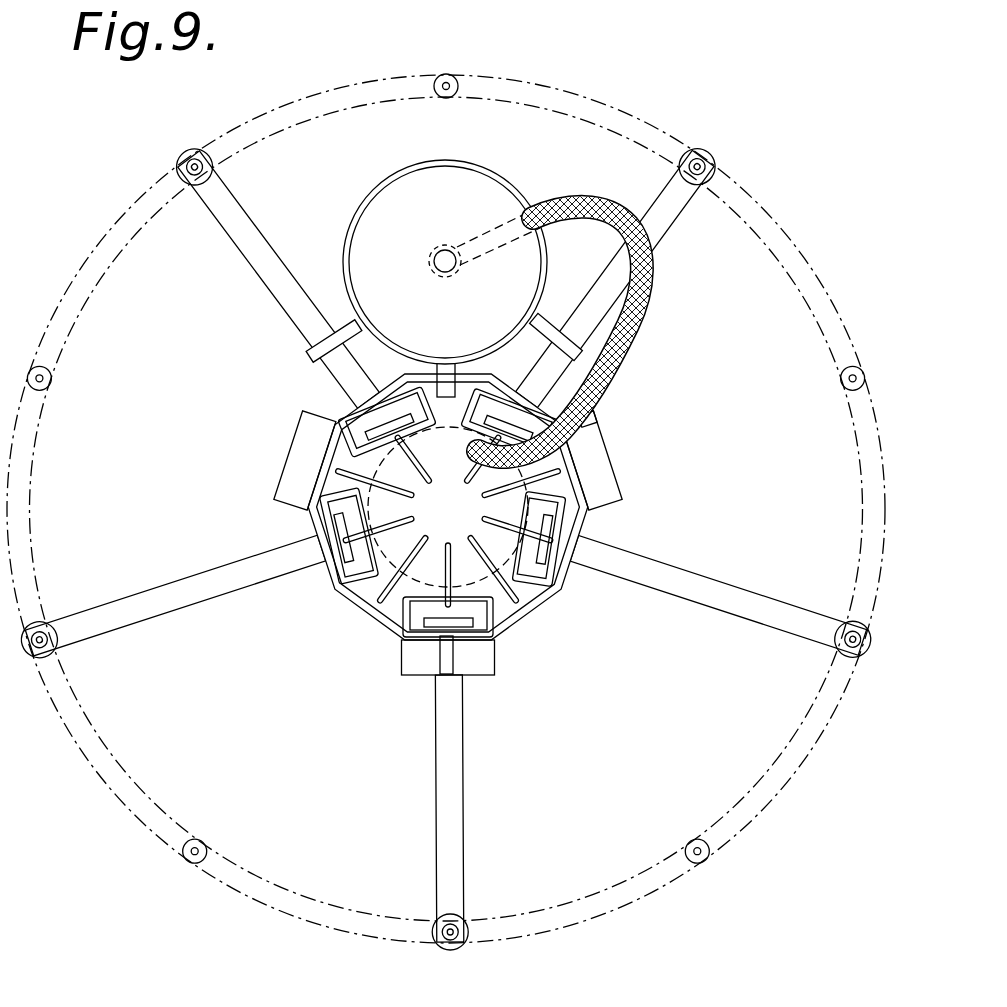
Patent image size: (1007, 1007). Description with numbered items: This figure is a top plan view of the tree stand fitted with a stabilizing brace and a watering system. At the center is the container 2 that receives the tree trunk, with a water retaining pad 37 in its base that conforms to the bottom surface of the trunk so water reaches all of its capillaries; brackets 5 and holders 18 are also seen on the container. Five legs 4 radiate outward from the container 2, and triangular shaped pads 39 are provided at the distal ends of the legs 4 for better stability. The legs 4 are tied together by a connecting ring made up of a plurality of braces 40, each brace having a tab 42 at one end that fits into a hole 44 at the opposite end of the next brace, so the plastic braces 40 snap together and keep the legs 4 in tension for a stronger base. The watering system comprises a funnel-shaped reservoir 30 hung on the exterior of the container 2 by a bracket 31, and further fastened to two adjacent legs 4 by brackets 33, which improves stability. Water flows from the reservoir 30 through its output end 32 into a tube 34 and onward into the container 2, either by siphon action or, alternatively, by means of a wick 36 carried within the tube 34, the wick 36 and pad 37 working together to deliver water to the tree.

The container 2 is at (535, 625).
The legs 4 is at (240, 260).
The mounting blocks 5 is at (330, 457).
The cartridge holders 18 is at (365, 620).
The reservoir 30 is at (352, 212).
The bracket 31 is at (442, 362).
The output end 32 is at (427, 258).
The bracket 33 is at (300, 352).
The tube 34 is at (613, 257).
The wick 36 is at (648, 300).
The water retaining pad 37 is at (448, 517).
The triangular shaped pads 39 is at (712, 160).
The braces 40 is at (580, 94).
The tab 42 is at (445, 468).
The hole 44 is at (700, 838).